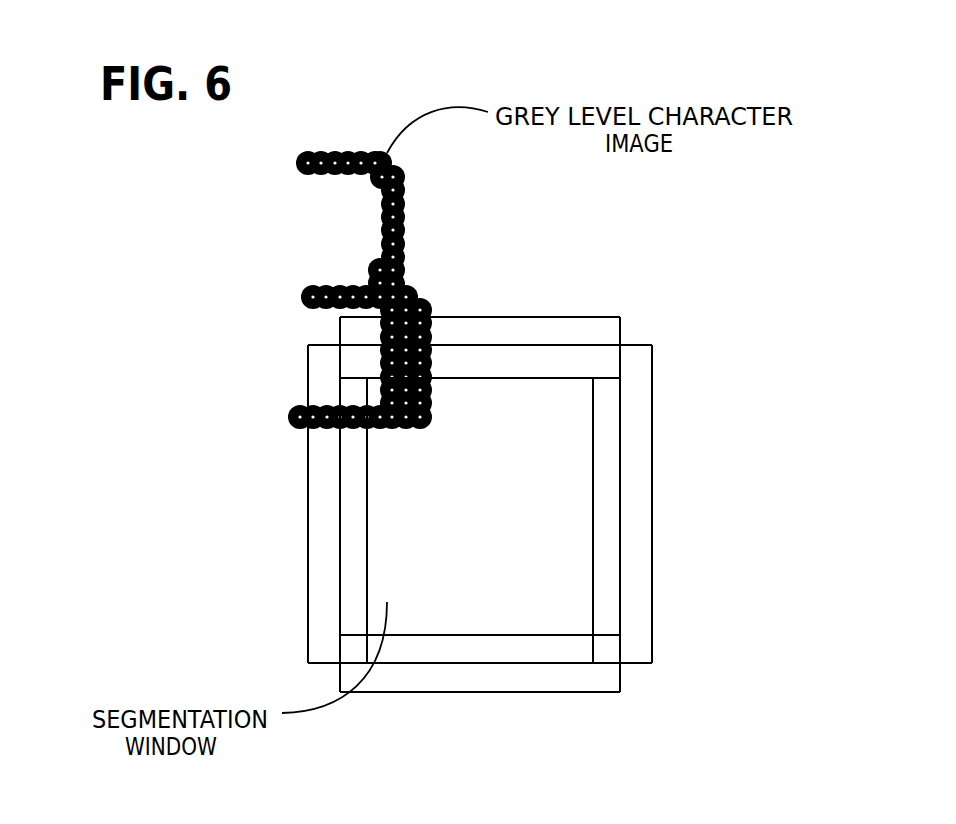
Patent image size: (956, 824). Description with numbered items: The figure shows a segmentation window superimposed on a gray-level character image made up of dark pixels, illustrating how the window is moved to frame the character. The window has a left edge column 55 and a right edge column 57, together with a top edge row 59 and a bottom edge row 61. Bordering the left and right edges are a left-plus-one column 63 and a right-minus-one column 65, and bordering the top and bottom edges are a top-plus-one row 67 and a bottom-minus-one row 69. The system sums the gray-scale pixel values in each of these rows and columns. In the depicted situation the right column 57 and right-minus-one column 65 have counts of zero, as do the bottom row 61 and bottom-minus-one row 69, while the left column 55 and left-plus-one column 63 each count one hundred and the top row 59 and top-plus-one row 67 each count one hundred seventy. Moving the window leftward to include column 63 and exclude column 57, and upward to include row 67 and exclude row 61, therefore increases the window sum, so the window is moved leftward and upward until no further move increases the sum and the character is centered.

The left edge column 55 is at (353, 503).
The right edge column 57 is at (603, 403).
The top edge row 59 is at (580, 360).
The bottom edge row 61 is at (563, 653).
The left+1 column 63 is at (317, 588).
The right−1 column 65 is at (635, 512).
The top+1 row 67 is at (578, 325).
The bottom−1 row 69 is at (447, 680).